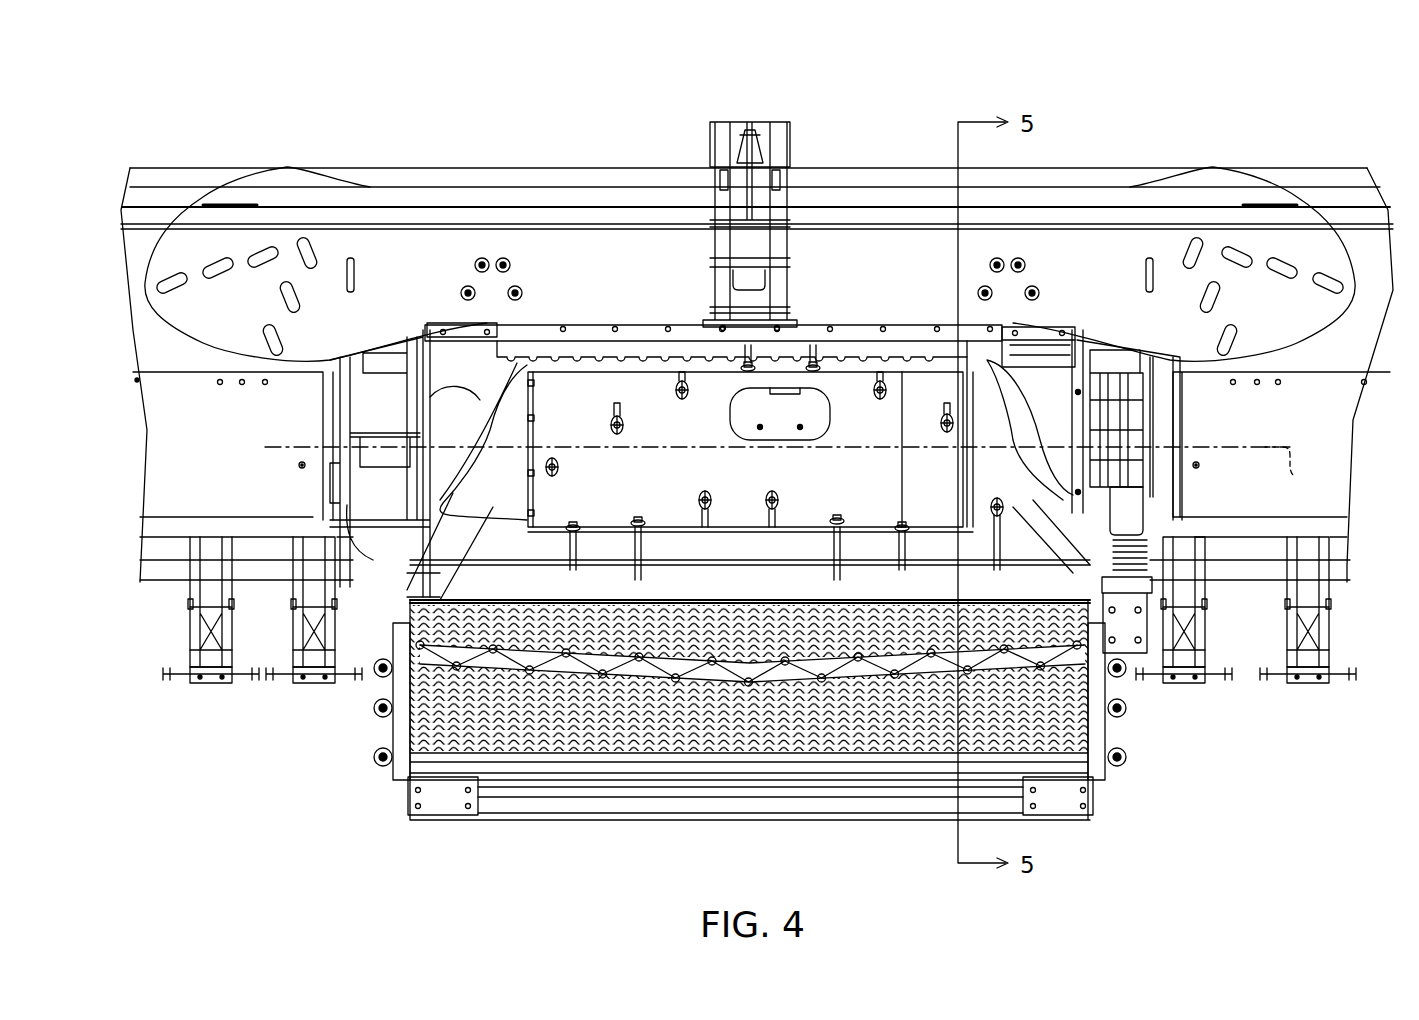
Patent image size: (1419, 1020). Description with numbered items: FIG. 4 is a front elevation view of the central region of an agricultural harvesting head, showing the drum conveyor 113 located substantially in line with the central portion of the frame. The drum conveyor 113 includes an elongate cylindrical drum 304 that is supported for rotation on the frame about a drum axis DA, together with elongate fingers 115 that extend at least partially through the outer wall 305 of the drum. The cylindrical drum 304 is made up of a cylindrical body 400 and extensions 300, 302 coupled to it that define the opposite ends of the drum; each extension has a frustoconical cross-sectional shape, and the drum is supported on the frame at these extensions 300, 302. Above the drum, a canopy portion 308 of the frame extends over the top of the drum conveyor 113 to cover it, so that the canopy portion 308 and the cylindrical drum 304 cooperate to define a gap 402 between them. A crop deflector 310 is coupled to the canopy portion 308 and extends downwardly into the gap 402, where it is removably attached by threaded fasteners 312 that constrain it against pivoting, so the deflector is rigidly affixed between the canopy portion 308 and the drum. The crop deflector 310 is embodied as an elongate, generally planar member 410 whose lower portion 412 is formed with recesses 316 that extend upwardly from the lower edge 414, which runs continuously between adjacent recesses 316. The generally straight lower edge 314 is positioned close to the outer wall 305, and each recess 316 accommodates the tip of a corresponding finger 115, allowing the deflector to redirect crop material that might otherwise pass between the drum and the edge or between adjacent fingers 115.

The drum conveyor 113 is at (557, 533).
The elongate fingers 115 is at (998, 527).
The extension 300 is at (500, 457).
The extension 302 is at (1000, 433).
The cylindrical drum 304 is at (812, 500).
The outer wall 305 is at (843, 486).
The canopy portion 308 is at (587, 278).
The crop deflector 310 is at (905, 395).
The threaded fasteners 312 is at (922, 327).
The lower edge 314 is at (840, 365).
The recesses 316 is at (597, 363).
The cylindrical body 400 is at (748, 345).
The gap 402 is at (673, 343).
The planar member 410 is at (813, 343).
The lower portion 412 is at (632, 350).
The lower edge 414 is at (647, 363).